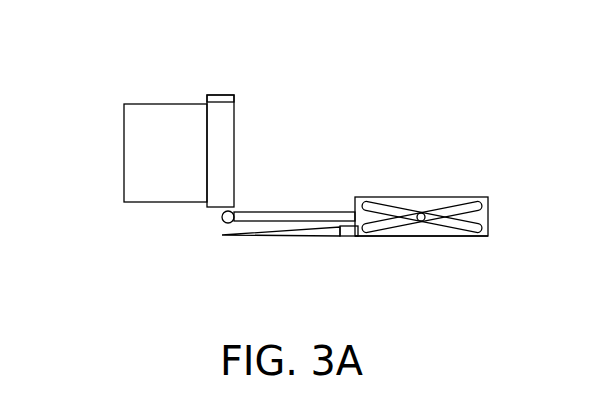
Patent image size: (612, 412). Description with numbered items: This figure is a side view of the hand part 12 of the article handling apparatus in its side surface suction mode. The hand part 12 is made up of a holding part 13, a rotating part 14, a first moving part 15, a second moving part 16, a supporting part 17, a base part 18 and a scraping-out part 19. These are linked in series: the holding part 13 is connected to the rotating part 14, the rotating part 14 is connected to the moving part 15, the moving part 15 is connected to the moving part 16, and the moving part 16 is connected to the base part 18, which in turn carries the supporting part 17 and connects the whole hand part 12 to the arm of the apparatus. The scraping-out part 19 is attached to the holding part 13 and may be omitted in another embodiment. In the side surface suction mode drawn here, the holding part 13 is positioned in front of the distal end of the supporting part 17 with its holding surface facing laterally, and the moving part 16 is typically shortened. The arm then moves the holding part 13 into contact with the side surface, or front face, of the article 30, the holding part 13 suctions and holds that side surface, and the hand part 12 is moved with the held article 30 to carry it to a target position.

The hand part 12 is at (428, 151).
The holding part 13 is at (230, 145).
The rotating part 14 is at (222, 220).
The moving part 15 is at (327, 211).
The moving part 16 is at (462, 197).
The supporting part 17 is at (308, 237).
The base part 18 is at (445, 236).
The scraping-out part 19 is at (233, 98).
The article 30 is at (124, 158).